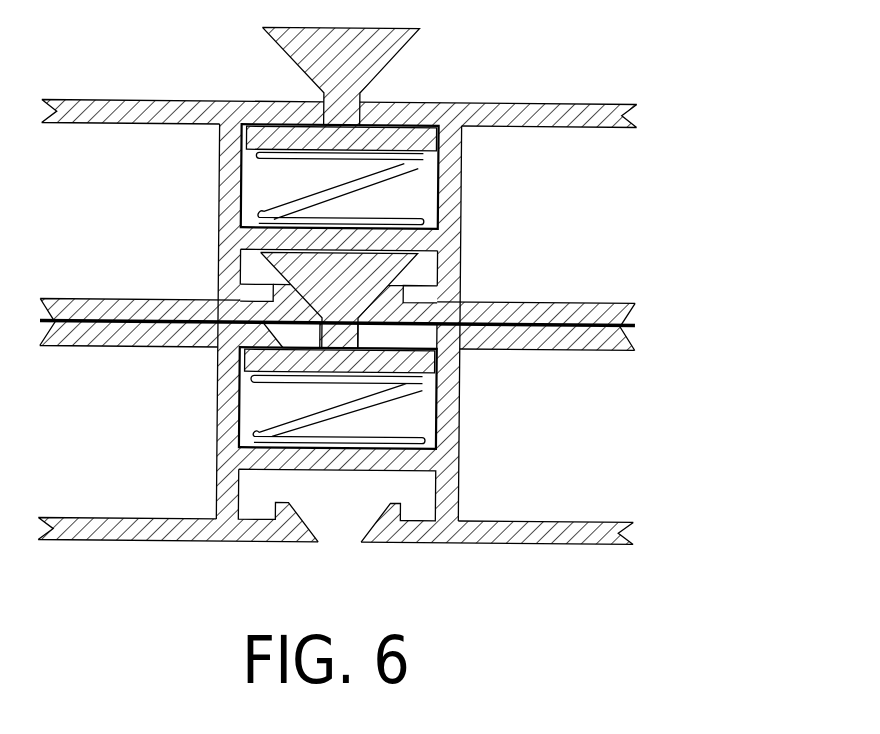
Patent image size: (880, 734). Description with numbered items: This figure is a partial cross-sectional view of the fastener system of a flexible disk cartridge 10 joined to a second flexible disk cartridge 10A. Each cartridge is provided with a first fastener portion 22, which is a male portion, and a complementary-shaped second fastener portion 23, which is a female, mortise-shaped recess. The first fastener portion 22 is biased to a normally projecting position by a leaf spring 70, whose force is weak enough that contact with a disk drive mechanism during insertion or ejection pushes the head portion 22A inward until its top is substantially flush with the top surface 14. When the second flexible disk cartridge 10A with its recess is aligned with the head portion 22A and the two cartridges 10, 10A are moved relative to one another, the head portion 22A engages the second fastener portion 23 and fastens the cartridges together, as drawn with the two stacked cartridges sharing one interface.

The top surface 14 is at (553, 105).
The leaf spring 70 is at (398, 184).
The second flexible disk cartridge 10A is at (598, 221).
The head portion 22A is at (238, 257).
The first fastener portion 22 is at (420, 276).
The second fastener portion 23 is at (240, 286).
The flexible disk cartridge 10 is at (594, 441).